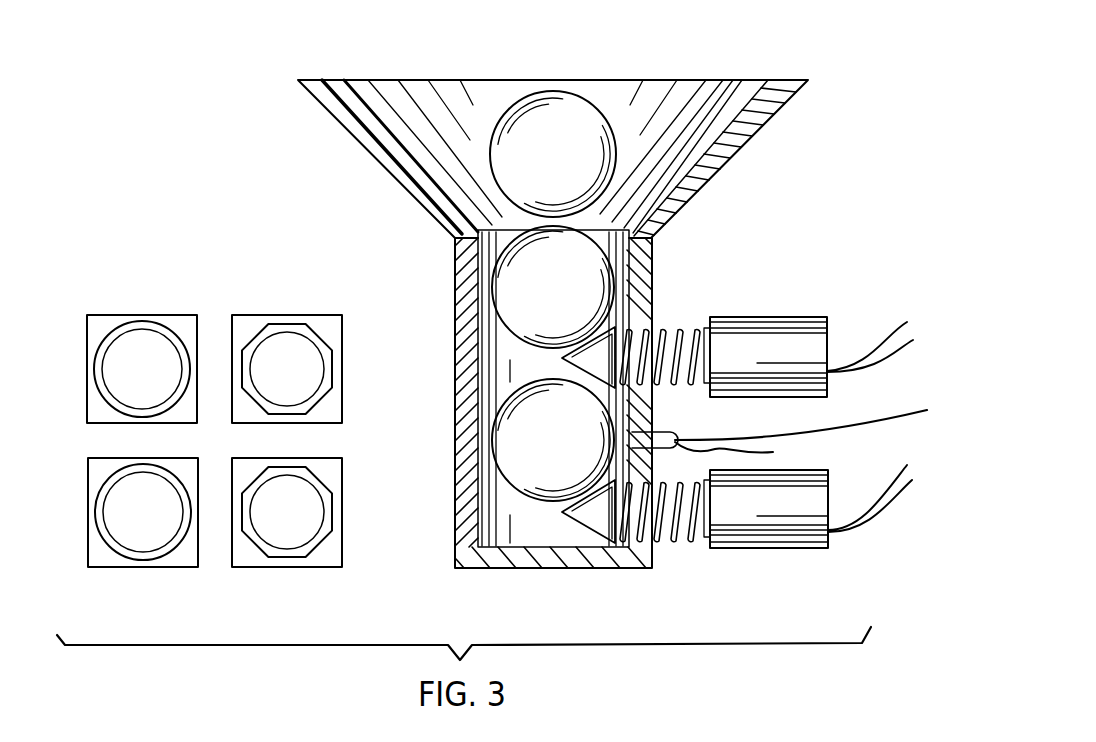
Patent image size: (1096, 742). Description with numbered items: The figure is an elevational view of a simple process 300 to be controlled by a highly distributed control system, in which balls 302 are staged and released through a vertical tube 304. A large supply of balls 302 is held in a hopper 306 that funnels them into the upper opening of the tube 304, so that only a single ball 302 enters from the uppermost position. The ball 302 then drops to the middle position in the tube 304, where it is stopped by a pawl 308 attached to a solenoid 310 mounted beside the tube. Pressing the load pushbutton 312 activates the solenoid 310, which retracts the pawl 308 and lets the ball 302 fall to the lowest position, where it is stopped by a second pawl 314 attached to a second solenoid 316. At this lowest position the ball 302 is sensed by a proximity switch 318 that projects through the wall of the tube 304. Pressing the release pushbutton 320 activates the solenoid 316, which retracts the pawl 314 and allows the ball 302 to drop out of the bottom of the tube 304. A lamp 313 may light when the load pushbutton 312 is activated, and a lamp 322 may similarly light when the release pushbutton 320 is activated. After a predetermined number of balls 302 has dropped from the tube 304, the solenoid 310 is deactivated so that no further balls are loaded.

The process 300 is at (792, 185).
The ball 302 is at (575, 167).
The tube 304 is at (652, 268).
The hopper 306 is at (347, 127).
The pawl 308 is at (605, 343).
The solenoid 310 is at (790, 316).
The load pushbutton 312 is at (342, 340).
The lamp 313 is at (87, 340).
The pawl 314 is at (598, 514).
The solenoid 316 is at (773, 540).
The proximity switch 318 is at (820, 433).
The release pushbutton 320 is at (342, 486).
The lamp 322 is at (88, 486).